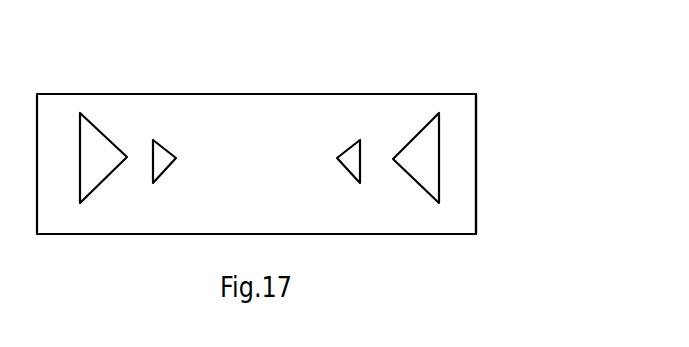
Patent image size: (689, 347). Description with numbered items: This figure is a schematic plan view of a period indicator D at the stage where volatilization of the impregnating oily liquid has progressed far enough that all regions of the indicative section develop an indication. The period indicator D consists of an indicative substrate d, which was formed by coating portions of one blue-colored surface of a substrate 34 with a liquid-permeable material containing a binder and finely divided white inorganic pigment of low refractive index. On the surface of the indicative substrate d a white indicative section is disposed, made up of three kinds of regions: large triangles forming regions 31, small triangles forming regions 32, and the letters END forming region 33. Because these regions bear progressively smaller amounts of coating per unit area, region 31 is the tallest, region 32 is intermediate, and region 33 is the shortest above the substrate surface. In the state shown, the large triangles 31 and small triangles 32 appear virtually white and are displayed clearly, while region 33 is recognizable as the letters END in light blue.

The large triangle region 31 is at (100, 155).
The small triangle region 32 is at (160, 147).
The letters END region 33 is at (299, 145).
The substrate 34 is at (465, 210).
The period indicator D is at (297, 133).
The indicative substrate d is at (477, 147).